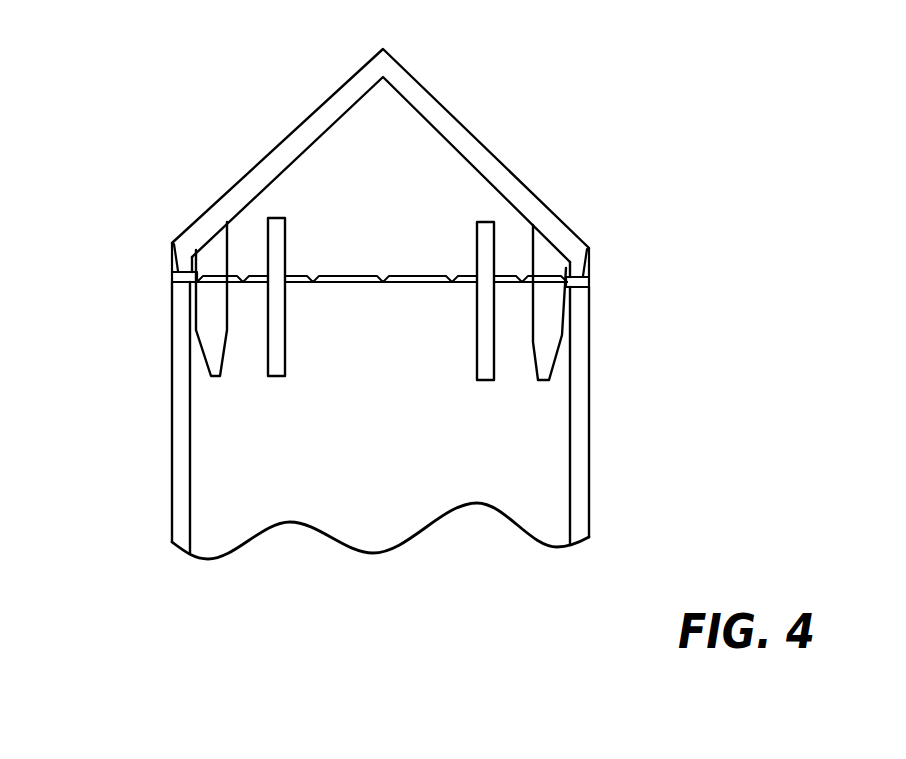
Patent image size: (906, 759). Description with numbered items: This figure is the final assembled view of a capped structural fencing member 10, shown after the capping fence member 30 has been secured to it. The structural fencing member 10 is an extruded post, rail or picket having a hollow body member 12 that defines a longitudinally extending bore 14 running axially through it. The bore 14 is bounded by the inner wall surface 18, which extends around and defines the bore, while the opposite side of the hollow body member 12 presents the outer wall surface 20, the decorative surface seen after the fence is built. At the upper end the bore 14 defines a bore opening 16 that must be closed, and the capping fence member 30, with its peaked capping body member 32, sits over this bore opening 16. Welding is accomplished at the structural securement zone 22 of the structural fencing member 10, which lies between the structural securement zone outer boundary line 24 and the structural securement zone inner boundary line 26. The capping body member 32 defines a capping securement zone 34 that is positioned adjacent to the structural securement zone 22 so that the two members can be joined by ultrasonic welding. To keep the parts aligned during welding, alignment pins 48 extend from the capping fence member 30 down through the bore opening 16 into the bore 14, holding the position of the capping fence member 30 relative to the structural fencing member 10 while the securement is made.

The structural fencing member 10 is at (577, 447).
The hollow body member 12 is at (155, 417).
The longitudinally extending bore 14 is at (392, 442).
The bore opening 16 is at (363, 283).
The inner wall surface 18 is at (191, 463).
The outer wall surface 20 is at (172, 397).
The structural securement zone 22 is at (176, 286).
The structural securement zone outer boundary line 24 is at (172, 278).
The structural securement zone inner boundary line 26 is at (573, 277).
The capping fence member 30 is at (435, 98).
The capping body member 32 is at (308, 122).
The capping securement zone 34 is at (174, 246).
The alignment pins 48 is at (272, 356).